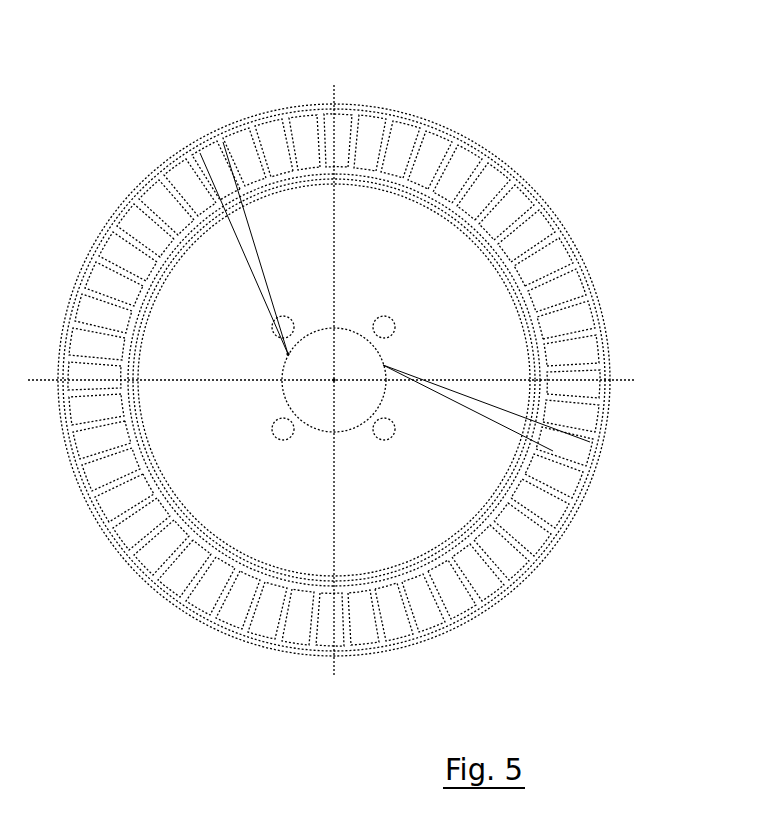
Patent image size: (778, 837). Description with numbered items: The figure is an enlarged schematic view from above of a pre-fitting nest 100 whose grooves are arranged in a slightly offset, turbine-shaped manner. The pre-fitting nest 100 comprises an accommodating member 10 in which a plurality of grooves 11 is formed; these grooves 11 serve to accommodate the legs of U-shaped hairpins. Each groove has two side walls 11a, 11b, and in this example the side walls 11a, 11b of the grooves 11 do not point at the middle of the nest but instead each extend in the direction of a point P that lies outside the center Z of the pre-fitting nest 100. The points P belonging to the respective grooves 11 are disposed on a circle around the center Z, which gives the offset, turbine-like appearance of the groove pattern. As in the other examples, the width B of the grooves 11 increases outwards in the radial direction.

The pre-fitting nest 100 is at (95, 37).
The accommodating member 10 is at (397, 115).
The grooves 11 is at (485, 186).
The side wall 11a is at (210, 168).
The side wall 11b is at (229, 180).
The point P is at (278, 356).
The center Z is at (327, 389).
The width B is at (334, 389).